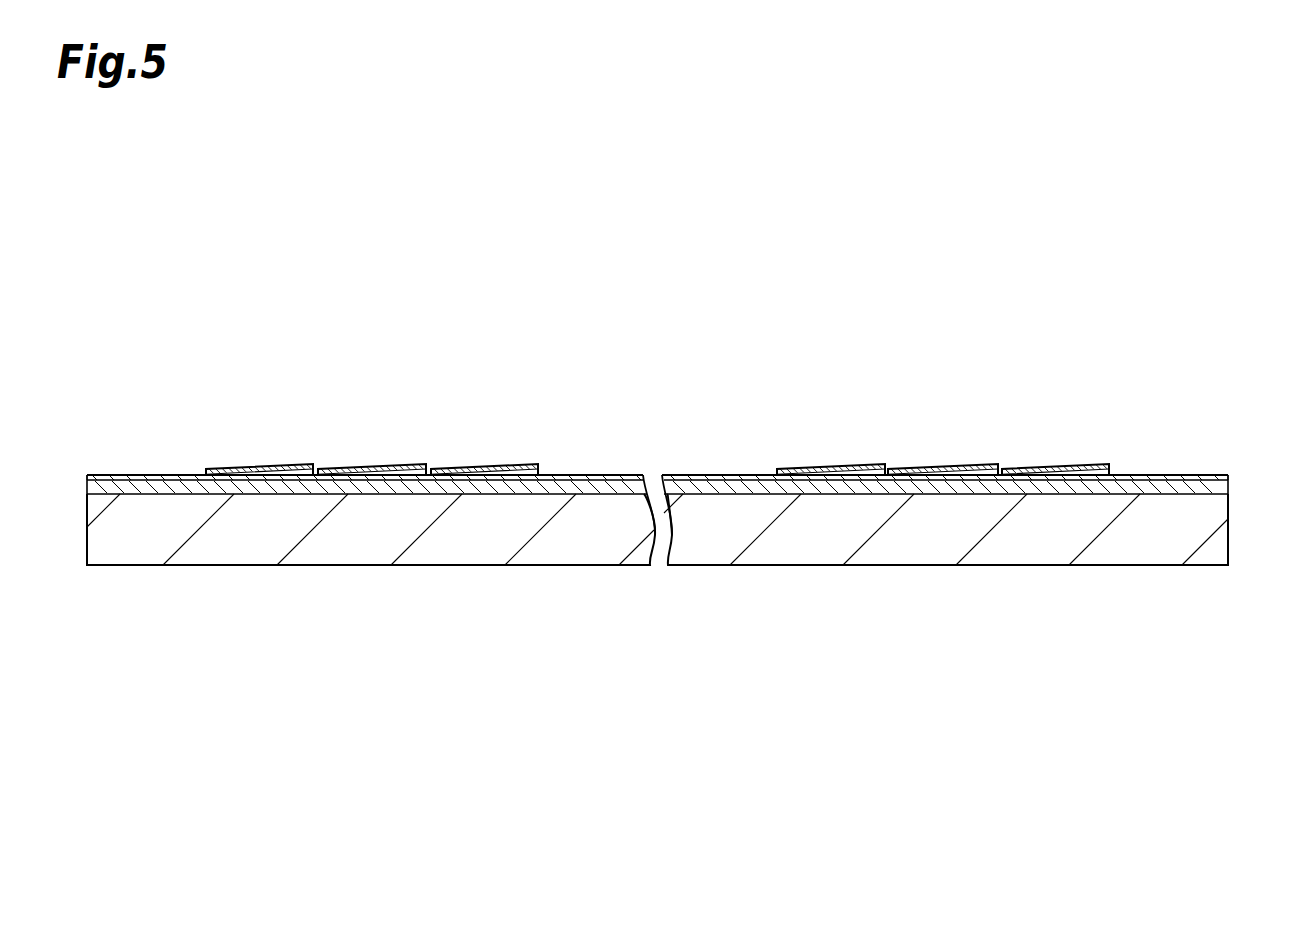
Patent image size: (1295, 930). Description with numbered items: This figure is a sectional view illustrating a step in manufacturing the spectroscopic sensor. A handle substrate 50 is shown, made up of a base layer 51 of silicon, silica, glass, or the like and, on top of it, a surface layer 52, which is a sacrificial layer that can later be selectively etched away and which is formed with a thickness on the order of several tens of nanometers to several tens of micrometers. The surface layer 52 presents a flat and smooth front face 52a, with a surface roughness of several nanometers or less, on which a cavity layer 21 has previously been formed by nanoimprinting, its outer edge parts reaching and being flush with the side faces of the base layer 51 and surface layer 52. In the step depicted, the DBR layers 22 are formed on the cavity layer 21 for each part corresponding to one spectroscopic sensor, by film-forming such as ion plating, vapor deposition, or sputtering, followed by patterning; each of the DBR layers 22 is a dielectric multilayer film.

The handle substrate 50 is at (686, 528).
The base layer 51 is at (1217, 538).
The surface layer 52 is at (1217, 485).
The front face 52a is at (1158, 475).
The cavity layer 21 is at (370, 477).
The DBR layer 22 is at (1063, 465).